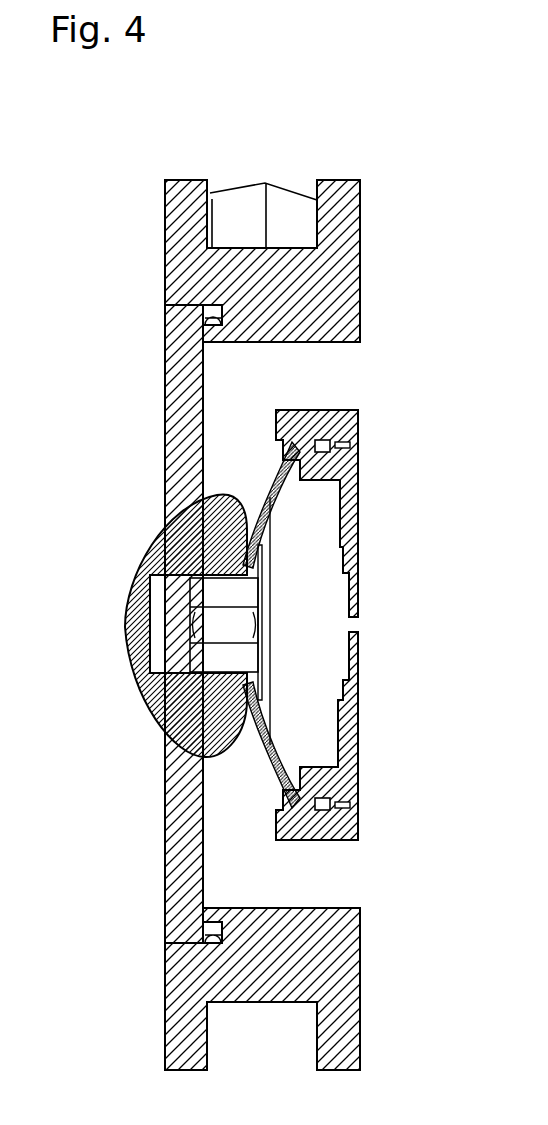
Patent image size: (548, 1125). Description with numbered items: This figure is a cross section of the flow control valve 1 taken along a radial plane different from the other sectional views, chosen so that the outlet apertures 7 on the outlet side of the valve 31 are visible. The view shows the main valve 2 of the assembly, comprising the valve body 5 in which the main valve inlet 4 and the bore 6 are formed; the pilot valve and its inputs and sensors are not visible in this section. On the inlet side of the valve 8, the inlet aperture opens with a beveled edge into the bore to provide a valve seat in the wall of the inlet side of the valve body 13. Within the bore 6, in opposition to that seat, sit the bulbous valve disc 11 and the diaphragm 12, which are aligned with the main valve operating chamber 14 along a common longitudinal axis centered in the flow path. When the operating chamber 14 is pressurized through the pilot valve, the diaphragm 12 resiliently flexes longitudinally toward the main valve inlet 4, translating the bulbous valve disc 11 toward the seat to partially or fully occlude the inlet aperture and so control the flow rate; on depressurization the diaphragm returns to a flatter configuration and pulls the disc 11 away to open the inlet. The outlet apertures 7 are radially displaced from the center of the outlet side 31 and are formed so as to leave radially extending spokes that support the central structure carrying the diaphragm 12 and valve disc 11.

The flow control valve 1 is at (140, 157).
The main valve 2 is at (376, 450).
The main valve inlet 4 is at (124, 522).
The valve body 5 is at (165, 250).
The bore 6 is at (229, 441).
The outlet apertures 7 is at (366, 359).
The inlet side of the valve 8 is at (156, 447).
The bulbous valve disc 11 is at (140, 690).
The diaphragm 12 is at (265, 488).
The inlet side of the valve body 13 is at (165, 920).
The main valve operating chamber 14 is at (280, 621).
The outlet side of the valve 31 is at (368, 275).